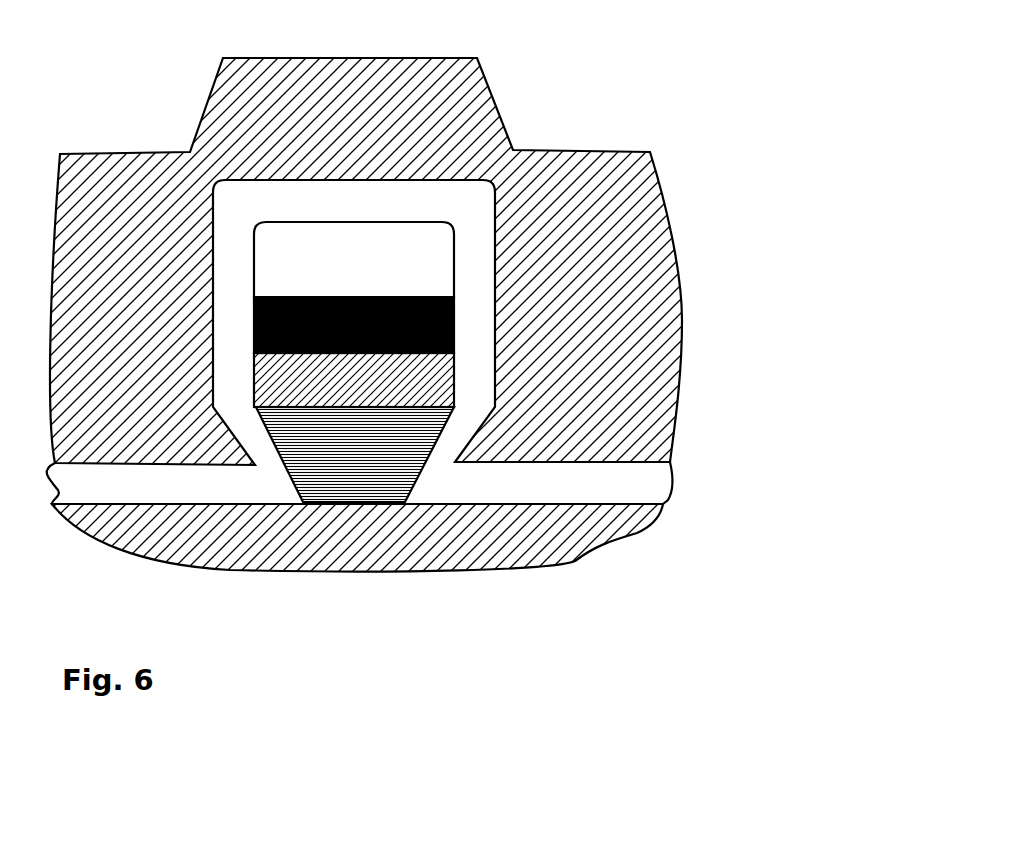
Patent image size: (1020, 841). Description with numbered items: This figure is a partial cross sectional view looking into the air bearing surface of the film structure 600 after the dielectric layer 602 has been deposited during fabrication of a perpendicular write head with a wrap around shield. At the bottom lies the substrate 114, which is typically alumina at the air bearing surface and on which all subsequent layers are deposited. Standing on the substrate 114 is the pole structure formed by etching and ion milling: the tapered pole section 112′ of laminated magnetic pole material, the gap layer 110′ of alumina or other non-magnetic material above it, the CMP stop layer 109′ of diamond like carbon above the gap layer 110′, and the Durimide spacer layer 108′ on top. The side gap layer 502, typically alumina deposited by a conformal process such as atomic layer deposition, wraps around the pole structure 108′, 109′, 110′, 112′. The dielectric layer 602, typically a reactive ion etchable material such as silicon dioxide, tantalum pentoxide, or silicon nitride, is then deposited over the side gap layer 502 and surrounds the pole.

The film structure 600 is at (406, 305).
The dielectric layer 602 is at (540, 320).
The side gap layer 502 is at (533, 487).
The substrate 114 is at (345, 546).
The tapered pole section 112′ is at (388, 469).
The gap layer 110′ is at (328, 394).
The CMP stop layer 109′ is at (327, 335).
The spacer layer 108′ is at (381, 277).